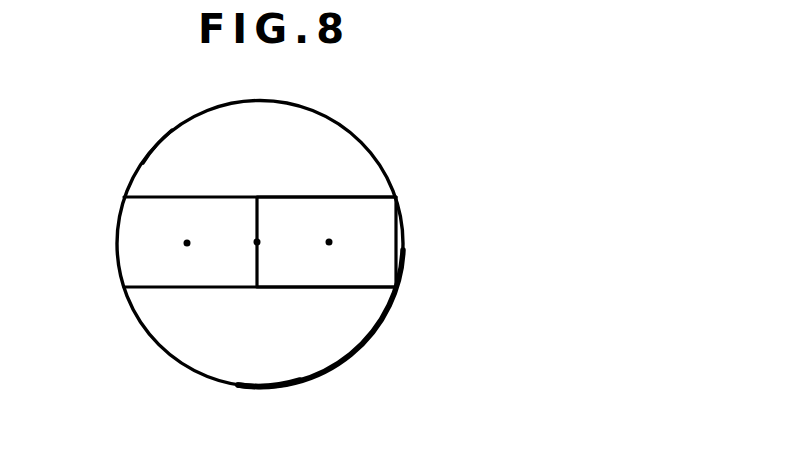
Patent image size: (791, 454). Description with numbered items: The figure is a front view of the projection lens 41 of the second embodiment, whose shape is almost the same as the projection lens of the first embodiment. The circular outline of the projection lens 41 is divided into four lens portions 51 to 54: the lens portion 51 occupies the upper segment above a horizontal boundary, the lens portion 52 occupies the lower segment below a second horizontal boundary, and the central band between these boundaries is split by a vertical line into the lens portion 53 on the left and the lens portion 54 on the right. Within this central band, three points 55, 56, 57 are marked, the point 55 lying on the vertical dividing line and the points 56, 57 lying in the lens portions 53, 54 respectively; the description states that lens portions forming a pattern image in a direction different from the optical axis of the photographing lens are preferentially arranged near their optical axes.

The projection lens 41 is at (289, 100).
The lens portion 51 is at (143, 163).
The lens portion 52 is at (273, 386).
The lens portion 53 is at (128, 229).
The lens portion 54 is at (394, 217).
The center reference point 55 is at (257, 242).
The left reference point 56 is at (187, 243).
The right reference point 57 is at (329, 242).